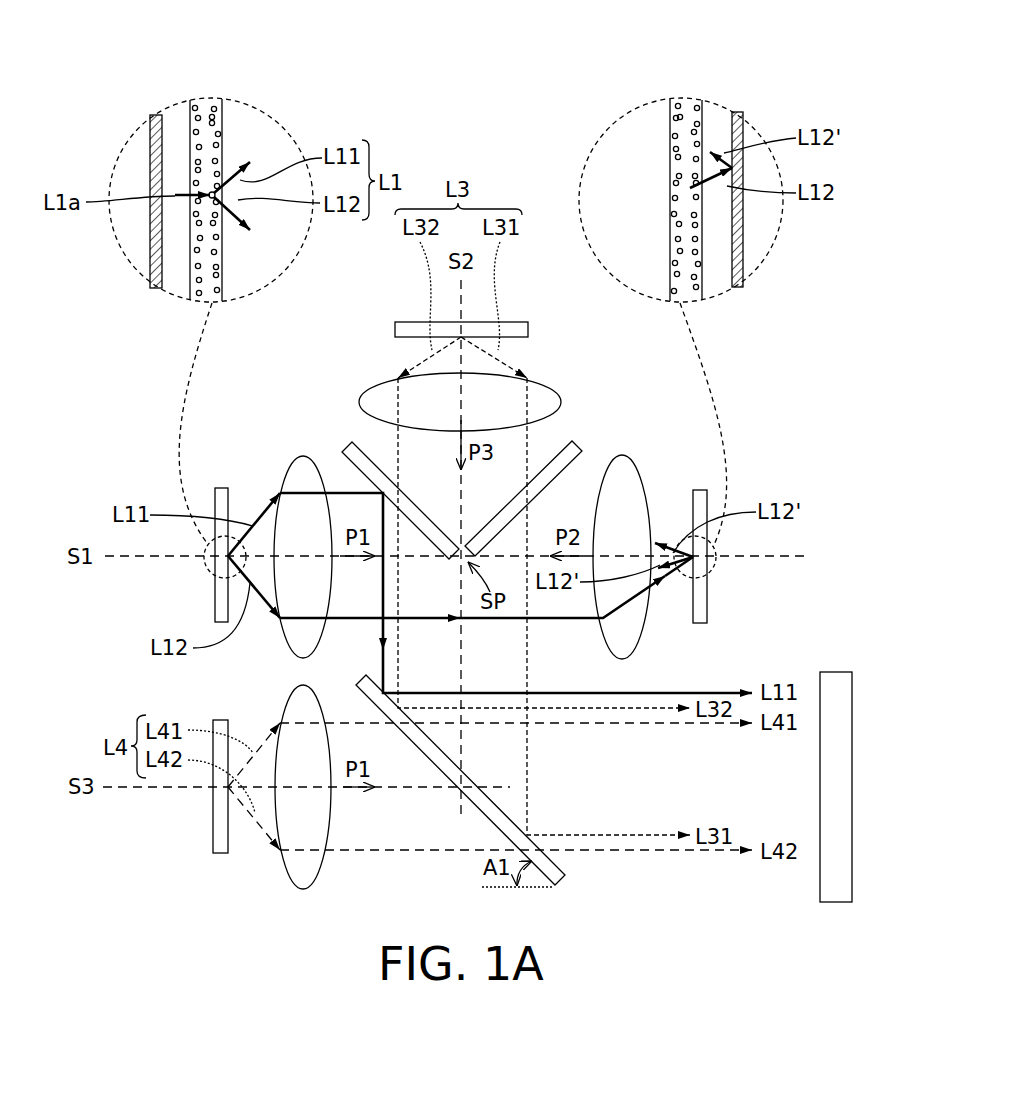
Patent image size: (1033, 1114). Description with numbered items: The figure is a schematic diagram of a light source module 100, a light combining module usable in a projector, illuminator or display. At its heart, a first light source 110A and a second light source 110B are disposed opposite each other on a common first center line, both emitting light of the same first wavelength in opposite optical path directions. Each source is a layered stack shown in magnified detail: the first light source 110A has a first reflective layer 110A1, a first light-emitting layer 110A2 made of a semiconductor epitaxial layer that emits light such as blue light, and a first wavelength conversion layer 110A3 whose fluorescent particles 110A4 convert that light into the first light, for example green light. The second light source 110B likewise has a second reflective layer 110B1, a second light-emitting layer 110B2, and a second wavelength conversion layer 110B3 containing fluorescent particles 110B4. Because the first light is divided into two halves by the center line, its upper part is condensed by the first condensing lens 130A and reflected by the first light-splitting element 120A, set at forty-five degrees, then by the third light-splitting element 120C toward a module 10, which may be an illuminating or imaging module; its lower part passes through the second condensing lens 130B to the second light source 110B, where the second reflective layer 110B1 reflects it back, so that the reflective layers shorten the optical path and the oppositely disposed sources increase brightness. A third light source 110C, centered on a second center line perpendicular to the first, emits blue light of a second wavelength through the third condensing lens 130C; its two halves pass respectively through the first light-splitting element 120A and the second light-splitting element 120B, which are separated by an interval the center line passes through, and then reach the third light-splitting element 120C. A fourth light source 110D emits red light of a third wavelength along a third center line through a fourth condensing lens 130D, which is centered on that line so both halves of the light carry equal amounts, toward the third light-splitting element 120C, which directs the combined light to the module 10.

The light source module 100 is at (378, 90).
The module 10 is at (835, 902).
The first light source 110A is at (213, 603).
The first reflective layer 110A1 is at (158, 288).
The first light-emitting layer 110A2 is at (178, 290).
The first wavelength conversion layer 110A3 is at (203, 300).
The fluorescent particles 110A4 is at (212, 115).
The second light source 110B is at (707, 600).
The second reflective layer 110B1 is at (738, 288).
The second light-emitting layer 110B2 is at (715, 284).
The second wavelength conversion layer 110B3 is at (692, 300).
The fluorescent particles 110B4 is at (680, 115).
The third light source 110C is at (418, 322).
The fourth light source 110D is at (213, 823).
The first light-splitting element 120A is at (350, 445).
The second light-splitting element 120B is at (580, 443).
The third light-splitting element 120C is at (567, 882).
The first condensing lens 130A is at (303, 455).
The second condensing lens 130B is at (622, 455).
The third condensing lens 130C is at (397, 378).
The fourth condensing lens 130D is at (303, 890).